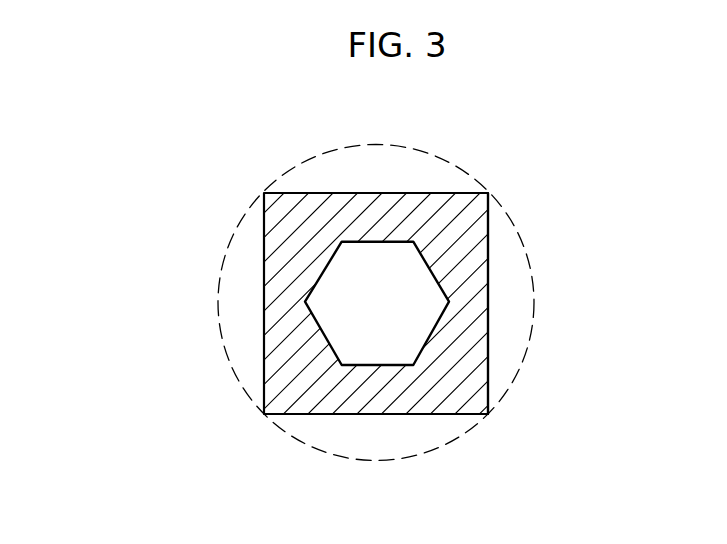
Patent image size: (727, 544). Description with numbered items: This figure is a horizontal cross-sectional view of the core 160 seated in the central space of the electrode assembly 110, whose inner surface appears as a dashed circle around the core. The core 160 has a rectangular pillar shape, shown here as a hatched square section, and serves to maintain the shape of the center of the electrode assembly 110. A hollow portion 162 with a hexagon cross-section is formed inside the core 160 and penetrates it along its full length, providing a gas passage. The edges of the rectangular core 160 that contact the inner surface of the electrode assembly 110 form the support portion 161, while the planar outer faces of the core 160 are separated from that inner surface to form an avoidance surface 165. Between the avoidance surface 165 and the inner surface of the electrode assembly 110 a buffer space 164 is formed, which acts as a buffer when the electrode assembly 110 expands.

The electrode assembly 110 is at (396, 332).
The core 160 is at (492, 285).
The support portion 161 is at (264, 413).
The hollow portion 162 is at (372, 263).
The buffer space 164 is at (377, 440).
The avoidance surface 165 is at (489, 347).